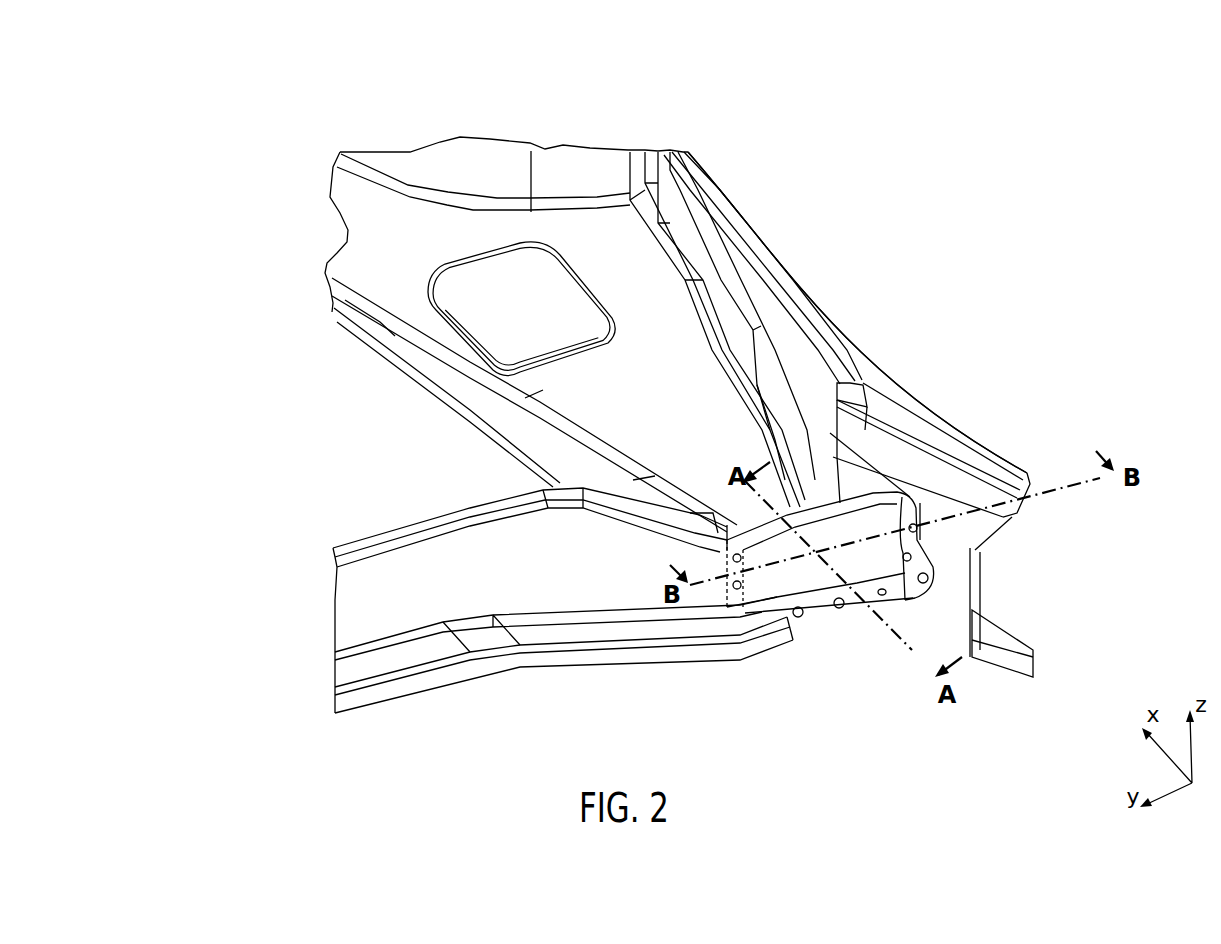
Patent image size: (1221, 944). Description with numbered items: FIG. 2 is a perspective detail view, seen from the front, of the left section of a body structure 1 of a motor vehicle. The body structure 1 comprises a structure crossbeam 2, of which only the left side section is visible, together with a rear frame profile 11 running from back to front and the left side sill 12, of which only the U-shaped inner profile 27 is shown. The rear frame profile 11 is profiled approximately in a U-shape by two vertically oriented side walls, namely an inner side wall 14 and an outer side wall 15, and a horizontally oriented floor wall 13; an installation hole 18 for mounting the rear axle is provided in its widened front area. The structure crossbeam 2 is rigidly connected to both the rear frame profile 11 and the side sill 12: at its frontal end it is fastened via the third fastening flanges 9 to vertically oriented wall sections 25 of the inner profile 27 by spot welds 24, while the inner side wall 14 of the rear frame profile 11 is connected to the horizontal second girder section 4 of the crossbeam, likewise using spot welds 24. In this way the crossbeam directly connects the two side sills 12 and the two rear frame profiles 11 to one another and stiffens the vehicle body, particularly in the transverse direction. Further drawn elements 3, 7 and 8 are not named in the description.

The body structure 1 is at (903, 296).
The structure crossbeam 2 is at (345, 547).
The sill lower section 3 is at (385, 665).
The second girder section 4 is at (352, 613).
The sill bottom flange 7 is at (457, 675).
The sill upper flange 8 is at (423, 527).
The third fastening flanges 9 is at (915, 530).
The rear frame profile 11 is at (397, 308).
The side sill 12 is at (713, 186).
The floor wall 13 is at (703, 362).
The inner side wall 14 is at (472, 400).
The outer side wall 15 is at (566, 160).
The installation hole 18 is at (458, 263).
The spot welds 24 is at (921, 582).
The wall sections 25 is at (954, 624).
The inner profile 27 is at (977, 447).